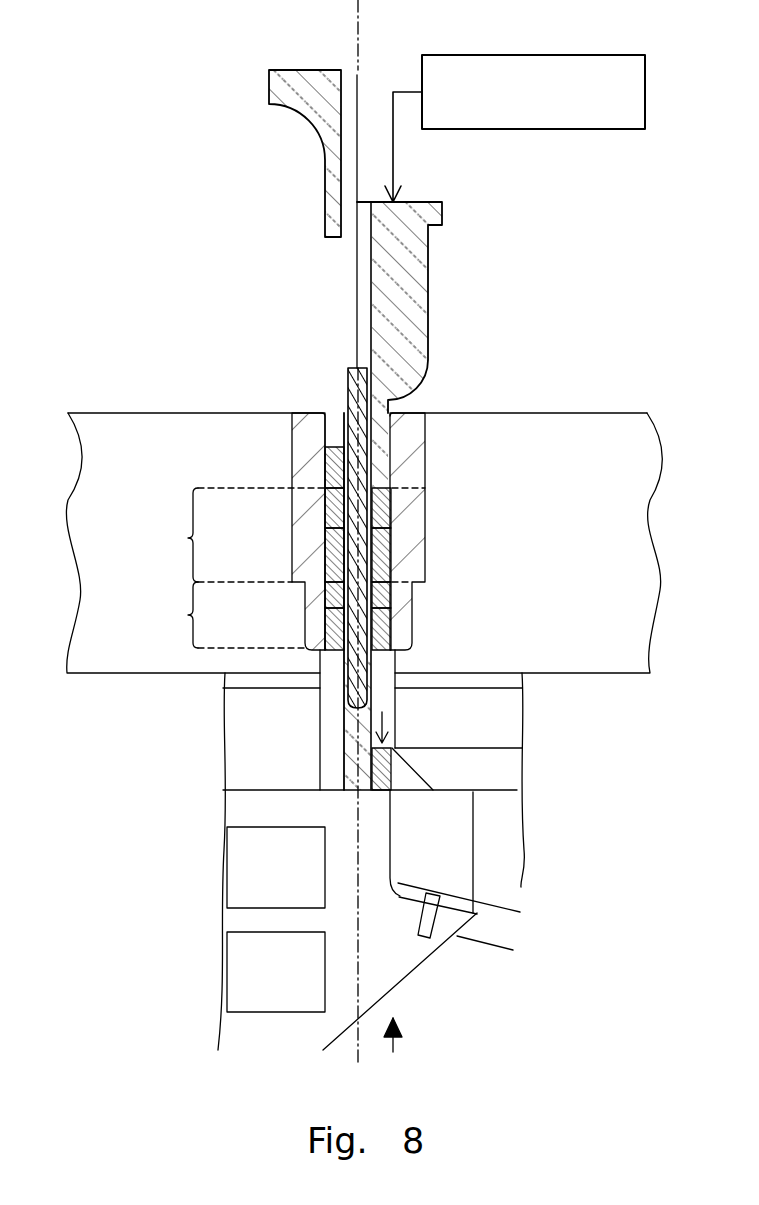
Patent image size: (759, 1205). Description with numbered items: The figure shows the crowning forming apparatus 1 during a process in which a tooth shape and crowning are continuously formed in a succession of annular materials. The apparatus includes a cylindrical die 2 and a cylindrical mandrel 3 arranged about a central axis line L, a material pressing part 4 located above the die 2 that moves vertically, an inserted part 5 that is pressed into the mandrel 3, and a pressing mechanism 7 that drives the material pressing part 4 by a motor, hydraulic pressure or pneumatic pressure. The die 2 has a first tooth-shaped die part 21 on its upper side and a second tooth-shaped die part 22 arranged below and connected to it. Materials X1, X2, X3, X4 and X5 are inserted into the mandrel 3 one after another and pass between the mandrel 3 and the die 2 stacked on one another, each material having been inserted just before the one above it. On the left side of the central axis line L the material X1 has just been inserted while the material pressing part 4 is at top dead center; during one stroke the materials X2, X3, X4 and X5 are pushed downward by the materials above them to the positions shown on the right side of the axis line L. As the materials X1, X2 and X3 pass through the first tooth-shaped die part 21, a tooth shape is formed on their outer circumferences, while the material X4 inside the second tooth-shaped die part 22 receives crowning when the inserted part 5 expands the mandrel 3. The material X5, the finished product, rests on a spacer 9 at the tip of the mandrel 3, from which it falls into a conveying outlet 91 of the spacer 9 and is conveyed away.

The crowning forming apparatus 1 is at (493, 222).
The cylindrical die 2 is at (292, 432).
The cylindrical mandrel 3 is at (354, 575).
The material pressing part 4 is at (328, 172).
The inserted part 5 is at (349, 372).
The pressing mechanism 7 is at (645, 85).
The spacer 9 is at (399, 851).
The conveying outlet 91 is at (466, 856).
The first tooth-shaped die part 21 is at (171, 535).
The second tooth-shaped die part 22 is at (171, 615).
The material X1 is at (325, 462).
The material X2 is at (325, 508).
The material X3 is at (325, 548).
The material X4 is at (325, 596).
The material X5 is at (325, 626).
The central axis line L is at (360, 12).